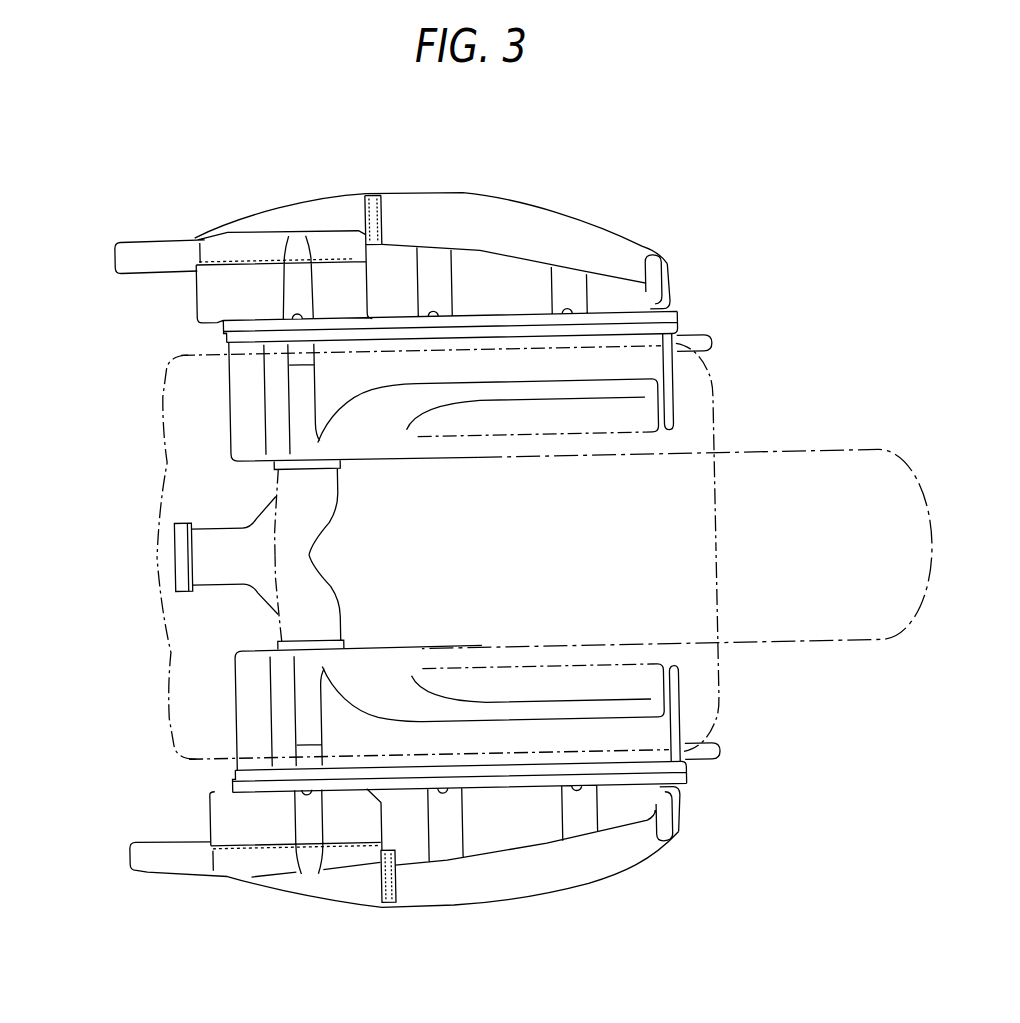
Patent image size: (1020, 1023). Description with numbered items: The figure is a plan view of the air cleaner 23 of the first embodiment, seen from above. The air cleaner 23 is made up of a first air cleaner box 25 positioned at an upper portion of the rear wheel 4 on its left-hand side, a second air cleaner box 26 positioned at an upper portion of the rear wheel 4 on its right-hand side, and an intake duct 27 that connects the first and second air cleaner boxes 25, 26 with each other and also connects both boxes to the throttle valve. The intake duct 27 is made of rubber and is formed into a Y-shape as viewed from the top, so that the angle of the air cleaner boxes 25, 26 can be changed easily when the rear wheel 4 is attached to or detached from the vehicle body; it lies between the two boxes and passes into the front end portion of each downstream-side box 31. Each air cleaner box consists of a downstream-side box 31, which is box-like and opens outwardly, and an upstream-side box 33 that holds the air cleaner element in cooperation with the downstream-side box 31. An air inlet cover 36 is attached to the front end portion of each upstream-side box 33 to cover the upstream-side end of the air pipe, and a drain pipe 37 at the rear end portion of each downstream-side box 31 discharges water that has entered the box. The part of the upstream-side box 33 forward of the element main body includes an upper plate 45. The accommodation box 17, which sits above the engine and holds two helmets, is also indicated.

The rear wheel 4 is at (779, 450).
The accommodation box 17 is at (717, 580).
The air cleaner 23 is at (72, 503).
The first air cleaner box 25 is at (232, 693).
The second air cleaner box 26 is at (232, 423).
The intake duct 27 is at (178, 556).
The downstream-side box 31 is at (650, 372).
The upstream-side box 33 is at (578, 237).
The air inlet cover 36 is at (330, 201).
The drain pipe 37 is at (687, 340).
The upper plate 45 is at (255, 813).